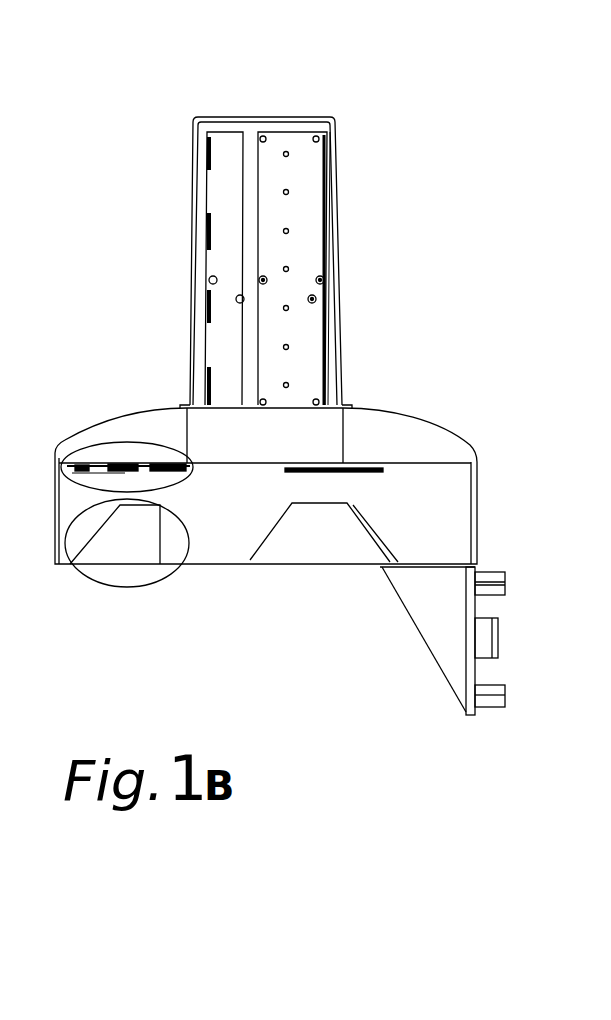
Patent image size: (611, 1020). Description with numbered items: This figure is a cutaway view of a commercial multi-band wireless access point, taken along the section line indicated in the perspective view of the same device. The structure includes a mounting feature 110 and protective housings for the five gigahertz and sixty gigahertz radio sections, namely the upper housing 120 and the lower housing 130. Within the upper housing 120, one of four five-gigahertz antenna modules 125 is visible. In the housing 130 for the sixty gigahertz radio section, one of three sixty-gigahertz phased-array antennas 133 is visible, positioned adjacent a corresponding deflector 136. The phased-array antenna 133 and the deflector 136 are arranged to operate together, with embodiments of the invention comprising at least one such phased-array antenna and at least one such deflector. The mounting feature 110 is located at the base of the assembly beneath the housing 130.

The mounting feature 110 is at (523, 563).
The upper housing 120 is at (357, 125).
The 5 GHz antenna module 125 is at (297, 152).
The protective housing for 60 GHz radio section 130 is at (497, 408).
The 60 GHz phased-array antenna 133 is at (62, 452).
The deflector 136 is at (86, 583).